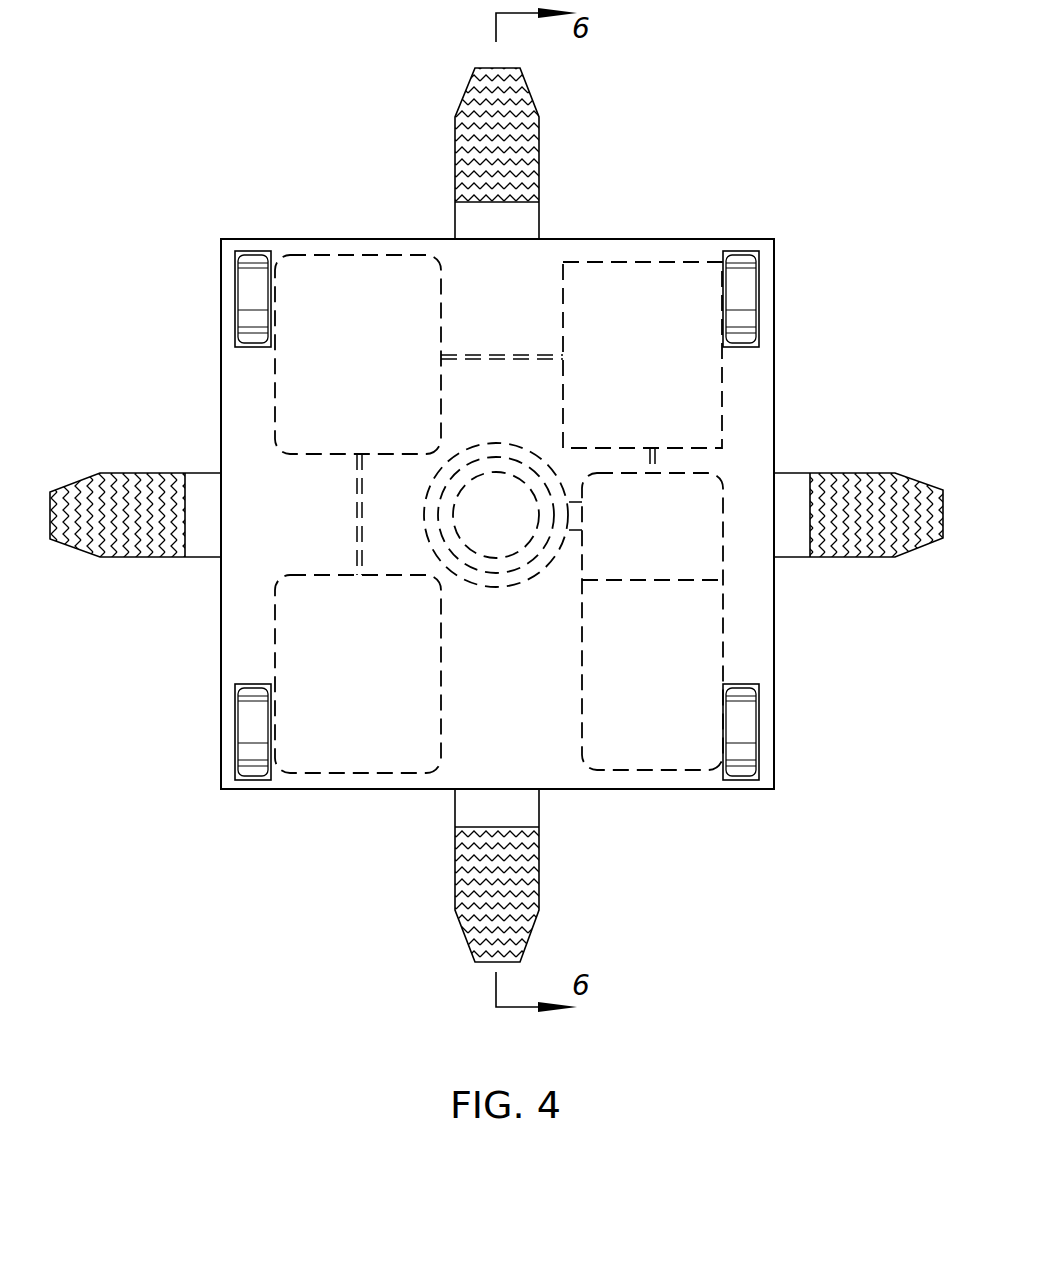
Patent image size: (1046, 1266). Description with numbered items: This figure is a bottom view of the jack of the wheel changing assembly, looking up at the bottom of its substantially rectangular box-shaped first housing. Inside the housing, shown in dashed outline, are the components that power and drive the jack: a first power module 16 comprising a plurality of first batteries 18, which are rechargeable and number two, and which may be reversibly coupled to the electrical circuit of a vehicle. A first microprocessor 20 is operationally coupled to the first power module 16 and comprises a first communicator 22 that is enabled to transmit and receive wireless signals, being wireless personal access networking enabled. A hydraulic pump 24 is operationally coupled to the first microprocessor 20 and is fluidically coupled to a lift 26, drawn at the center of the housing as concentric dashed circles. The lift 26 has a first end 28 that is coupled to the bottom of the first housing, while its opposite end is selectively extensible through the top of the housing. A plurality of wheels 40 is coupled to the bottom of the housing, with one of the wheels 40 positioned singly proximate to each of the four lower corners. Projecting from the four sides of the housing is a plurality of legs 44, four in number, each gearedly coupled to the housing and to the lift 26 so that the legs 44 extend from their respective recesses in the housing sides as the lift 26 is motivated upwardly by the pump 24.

The first power module 16 is at (338, 750).
The first batteries 18 is at (293, 633).
The first microprocessor 20 is at (645, 277).
The first communicator 22 is at (703, 408).
The pump 24 is at (683, 632).
The lift 26 is at (492, 473).
The first end 28 is at (496, 528).
The wheels 40 is at (248, 300).
The legs 44 is at (860, 490).